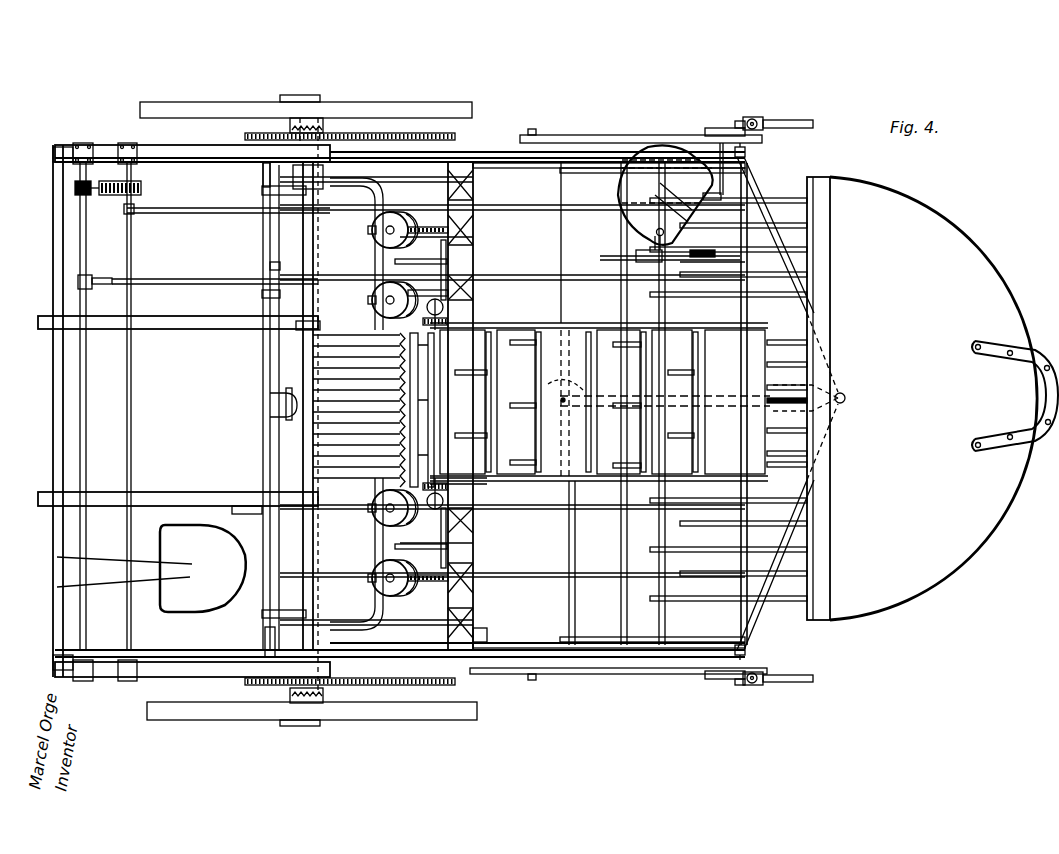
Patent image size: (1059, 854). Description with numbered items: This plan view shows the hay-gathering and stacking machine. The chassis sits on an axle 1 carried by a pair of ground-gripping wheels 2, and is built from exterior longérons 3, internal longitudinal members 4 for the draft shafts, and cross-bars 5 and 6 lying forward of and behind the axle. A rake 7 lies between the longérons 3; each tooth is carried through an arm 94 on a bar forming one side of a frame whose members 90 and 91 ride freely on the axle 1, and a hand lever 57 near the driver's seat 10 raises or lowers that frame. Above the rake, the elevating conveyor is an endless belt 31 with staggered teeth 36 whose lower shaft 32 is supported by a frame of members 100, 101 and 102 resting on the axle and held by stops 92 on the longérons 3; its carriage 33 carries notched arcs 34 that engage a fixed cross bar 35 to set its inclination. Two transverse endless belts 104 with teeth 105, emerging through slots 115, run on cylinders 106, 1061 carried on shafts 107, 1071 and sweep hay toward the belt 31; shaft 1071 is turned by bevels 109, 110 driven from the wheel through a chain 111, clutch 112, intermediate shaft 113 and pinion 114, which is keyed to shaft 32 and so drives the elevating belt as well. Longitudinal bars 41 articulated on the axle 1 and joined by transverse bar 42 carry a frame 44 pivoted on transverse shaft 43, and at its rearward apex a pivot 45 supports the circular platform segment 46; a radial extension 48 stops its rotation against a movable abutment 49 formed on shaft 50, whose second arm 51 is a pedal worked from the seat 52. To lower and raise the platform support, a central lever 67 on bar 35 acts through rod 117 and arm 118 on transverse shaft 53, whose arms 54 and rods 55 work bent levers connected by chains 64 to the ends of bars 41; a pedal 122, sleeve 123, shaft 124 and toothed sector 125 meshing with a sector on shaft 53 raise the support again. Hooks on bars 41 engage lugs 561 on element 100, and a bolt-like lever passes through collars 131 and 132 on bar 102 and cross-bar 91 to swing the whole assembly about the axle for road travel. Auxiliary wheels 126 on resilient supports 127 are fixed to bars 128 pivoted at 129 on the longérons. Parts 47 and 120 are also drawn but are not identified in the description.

The axle 1 is at (293, 673).
The wheels 2 is at (160, 112).
The longérons 3 is at (67, 152).
The internal longitudinal members 4 is at (163, 322).
The cross-bar 5 is at (62, 428).
The cross-bar 6 is at (307, 343).
The rake 7 is at (317, 417).
The driver's seat 10 is at (212, 532).
The endless belt 31 is at (570, 330).
The lower shaft 32 is at (457, 510).
The carriage 33 is at (603, 478).
The notched arcs 34 is at (592, 322).
The fixed cross bar 35 is at (623, 528).
The staggered teeth 36 is at (470, 373).
The longitudinal bars 41 is at (540, 168).
The transverse bar 42 is at (572, 603).
The transverse shaft 43 is at (666, 593).
The frame 44 is at (675, 637).
The supporting pivot 45 is at (845, 401).
The platform 46 is at (898, 193).
The rake teeth 47 is at (767, 198).
The radial extension 48 is at (1056, 357).
The movable abutment 49 is at (567, 398).
The transverse shaft 50 is at (573, 277).
The pedal 51 is at (633, 254).
The seat 52 is at (666, 196).
The transverse shaft 53 is at (83, 247).
The arms 54 is at (60, 146).
The rods 55 is at (157, 164).
The lugs 561 is at (482, 635).
The hand lever 57 is at (237, 507).
The chains 64 is at (745, 154).
The central lever 67 is at (690, 262).
The frame bar 90 is at (290, 190).
The cross-bar 91 is at (279, 243).
The stops 92 is at (263, 172).
The arm 94 is at (317, 368).
The frame element 100 is at (434, 177).
The frame member 101 is at (477, 487).
The transverse bar 102 is at (265, 452).
The endless belts 104 is at (440, 232).
The teeth 105 is at (445, 262).
The cylinders 106 is at (411, 217).
The cylinders 1061 is at (300, 324).
The shaft 107 is at (283, 218).
The shaft 1071 is at (265, 294).
The bevel 109 is at (448, 273).
The bevel 110 is at (463, 294).
The chain 111 is at (350, 133).
The clutch 112 is at (292, 120).
The intermediate shaft 113 is at (452, 196).
The pinion 114 is at (452, 308).
The slots 115 is at (278, 266).
The rod 117 is at (160, 280).
The arm 118 is at (103, 277).
The bracket 120 is at (704, 135).
The pedal 122 is at (721, 140).
The sleeve 123 is at (133, 213).
The transverse shaft 124 is at (128, 405).
The toothed sector 125 is at (105, 195).
The auxiliary wheels 126 is at (789, 123).
The resilient supports 127 is at (754, 122).
The bars 128 is at (622, 132).
The pivots 129 is at (535, 129).
The collar 131 is at (272, 397).
The collar 132 is at (286, 408).